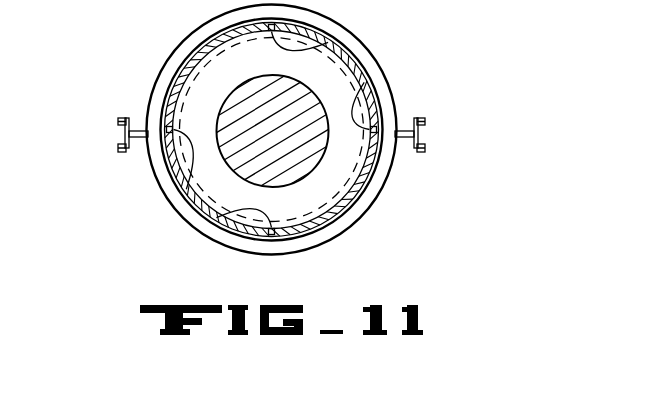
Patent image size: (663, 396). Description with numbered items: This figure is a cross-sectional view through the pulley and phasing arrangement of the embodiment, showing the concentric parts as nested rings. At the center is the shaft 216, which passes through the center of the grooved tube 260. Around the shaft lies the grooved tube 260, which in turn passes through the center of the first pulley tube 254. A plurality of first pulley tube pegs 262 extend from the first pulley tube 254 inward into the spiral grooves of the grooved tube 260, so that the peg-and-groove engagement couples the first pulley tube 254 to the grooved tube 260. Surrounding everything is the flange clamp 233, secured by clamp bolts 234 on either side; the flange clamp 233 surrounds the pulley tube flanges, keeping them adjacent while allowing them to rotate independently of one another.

The flange clamp 233 is at (192, 31).
The first pulley tube 254 is at (174, 72).
The clamp bolts 234 is at (133, 117).
The first pulley tube pegs 262 is at (357, 97).
The grooved tube 260 is at (361, 191).
The shaft 216 is at (297, 181).